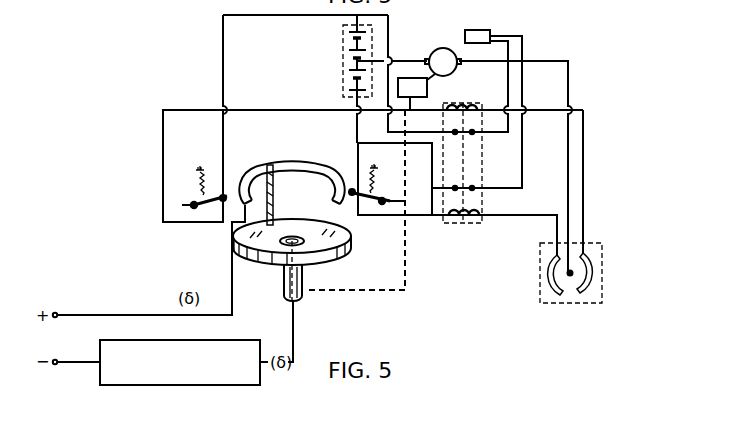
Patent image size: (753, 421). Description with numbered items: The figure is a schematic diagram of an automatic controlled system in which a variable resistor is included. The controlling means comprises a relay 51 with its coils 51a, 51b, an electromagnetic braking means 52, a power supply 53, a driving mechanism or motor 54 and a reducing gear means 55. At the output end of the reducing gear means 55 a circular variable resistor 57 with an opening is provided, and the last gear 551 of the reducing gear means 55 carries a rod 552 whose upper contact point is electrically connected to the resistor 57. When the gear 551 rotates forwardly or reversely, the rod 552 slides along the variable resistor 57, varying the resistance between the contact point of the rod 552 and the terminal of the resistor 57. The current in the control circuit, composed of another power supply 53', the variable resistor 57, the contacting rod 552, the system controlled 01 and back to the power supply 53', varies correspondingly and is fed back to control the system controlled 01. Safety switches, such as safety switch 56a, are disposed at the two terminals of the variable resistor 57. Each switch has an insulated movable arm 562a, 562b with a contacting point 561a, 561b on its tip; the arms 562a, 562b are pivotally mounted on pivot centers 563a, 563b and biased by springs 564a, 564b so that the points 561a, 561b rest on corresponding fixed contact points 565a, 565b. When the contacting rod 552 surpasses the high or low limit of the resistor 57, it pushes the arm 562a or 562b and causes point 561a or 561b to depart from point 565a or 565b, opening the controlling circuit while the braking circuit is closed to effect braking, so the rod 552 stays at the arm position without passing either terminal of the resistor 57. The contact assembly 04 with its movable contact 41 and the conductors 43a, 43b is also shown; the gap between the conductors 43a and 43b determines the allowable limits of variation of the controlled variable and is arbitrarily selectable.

The system controlled 01 is at (212, 386).
The contact assembly 04 is at (603, 252).
The movable contact 41 is at (576, 276).
The conductor 43a is at (552, 294).
The conductor 43b is at (584, 289).
The relay 51 is at (476, 163).
The relay coil 51a is at (468, 103).
The relay coil 51b is at (467, 222).
The electromagnetic braking means 52 is at (480, 29).
The power supply 53 is at (336, 79).
The power supply 53' is at (62, 338).
The driving mechanism 54 is at (440, 53).
The reducing gear means 55 is at (428, 88).
The safety switch 56a is at (180, 224).
The contacting point 561a is at (222, 194).
The insulated moveable arm 562a is at (210, 218).
The pivot center 563a is at (186, 205).
The spring 564a is at (200, 182).
The fixed contact point 565a is at (226, 192).
The contacting point 561b is at (354, 196).
The insulated moveable arm 562b is at (362, 203).
The pivot center 563b is at (372, 203).
The spring 564b is at (378, 186).
The fixed contact point 565b is at (352, 190).
The circular variable resistor 57 is at (298, 163).
The rod 552 is at (272, 192).
The last gear 551 is at (310, 275).